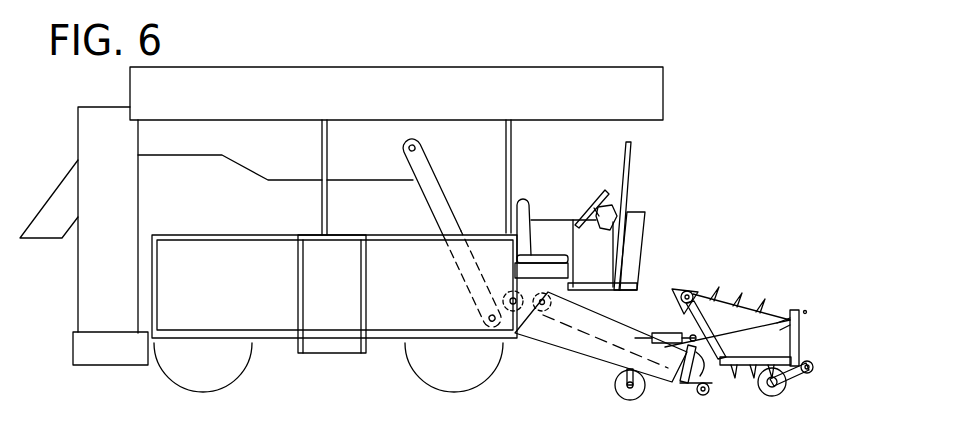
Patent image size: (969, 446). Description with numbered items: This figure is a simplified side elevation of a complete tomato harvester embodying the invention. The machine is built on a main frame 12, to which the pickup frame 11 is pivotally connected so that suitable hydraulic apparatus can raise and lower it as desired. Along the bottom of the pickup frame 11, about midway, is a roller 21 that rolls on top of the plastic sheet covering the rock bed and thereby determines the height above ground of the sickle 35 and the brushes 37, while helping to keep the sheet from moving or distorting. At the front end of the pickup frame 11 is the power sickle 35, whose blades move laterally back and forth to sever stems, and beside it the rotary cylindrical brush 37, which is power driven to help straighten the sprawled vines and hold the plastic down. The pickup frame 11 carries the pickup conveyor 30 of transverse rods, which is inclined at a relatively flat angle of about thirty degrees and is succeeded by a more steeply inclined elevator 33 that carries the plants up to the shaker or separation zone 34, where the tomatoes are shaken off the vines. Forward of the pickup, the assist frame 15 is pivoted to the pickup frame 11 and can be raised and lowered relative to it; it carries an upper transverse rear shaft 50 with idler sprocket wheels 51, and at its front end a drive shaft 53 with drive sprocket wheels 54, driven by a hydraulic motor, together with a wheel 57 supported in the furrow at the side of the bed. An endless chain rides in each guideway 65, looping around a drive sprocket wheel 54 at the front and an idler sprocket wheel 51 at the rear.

The pickup frame 11 is at (608, 355).
The main frame 12 is at (386, 338).
The assist frame 15 is at (732, 338).
The roller 21 is at (622, 398).
The pickup conveyor 30 is at (557, 325).
The elevator 33 is at (440, 172).
The shaker or separation zone 34 is at (368, 175).
The power sickle 35 is at (686, 392).
The rotary cylindrical brush 37 is at (708, 395).
The upper transverse rear shaft 50 is at (693, 287).
The idler sprocket wheel 51 is at (688, 291).
The drive shaft 53 is at (812, 362).
The drive sprocket wheel 54 is at (815, 370).
The wheel 57 is at (786, 390).
The guideway 65 is at (747, 368).